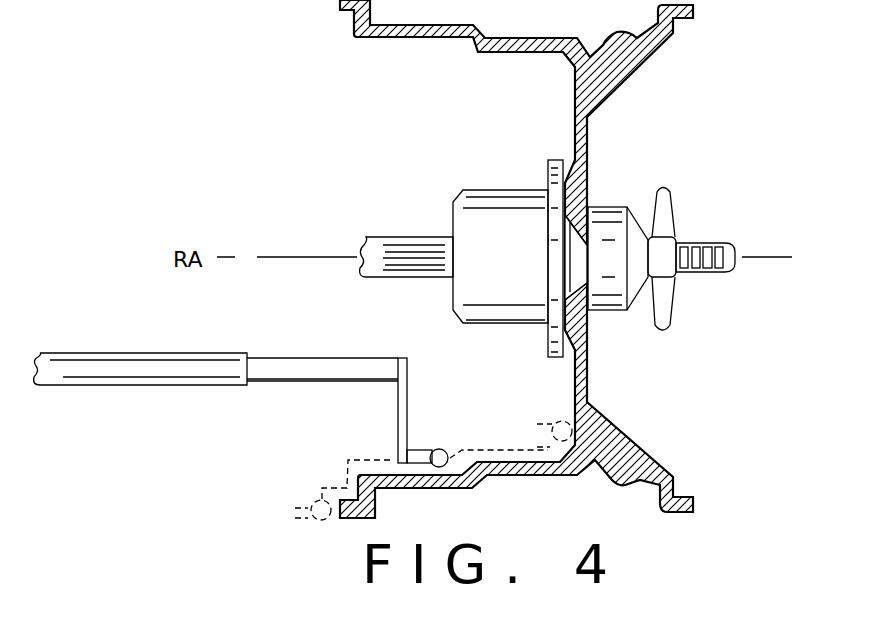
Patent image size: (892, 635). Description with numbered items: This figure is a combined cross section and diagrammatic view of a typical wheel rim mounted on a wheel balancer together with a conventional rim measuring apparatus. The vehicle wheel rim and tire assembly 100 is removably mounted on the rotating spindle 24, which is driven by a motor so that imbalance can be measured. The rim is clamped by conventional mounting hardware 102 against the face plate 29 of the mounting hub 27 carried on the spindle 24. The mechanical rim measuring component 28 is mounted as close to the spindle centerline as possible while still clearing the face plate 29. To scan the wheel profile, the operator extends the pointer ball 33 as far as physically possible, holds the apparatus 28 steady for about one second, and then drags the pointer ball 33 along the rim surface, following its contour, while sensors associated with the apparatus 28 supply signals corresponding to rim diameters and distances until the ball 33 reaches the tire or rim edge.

The vehicle wheel rim and tire assembly 100 is at (640, 435).
The mounting hardware 102 is at (638, 180).
The rotating spindle 24 is at (417, 237).
The mounting hub 27 is at (513, 192).
The face plate 29 is at (558, 160).
The rim measuring component 28 is at (257, 400).
The pointer ball 33 is at (438, 448).